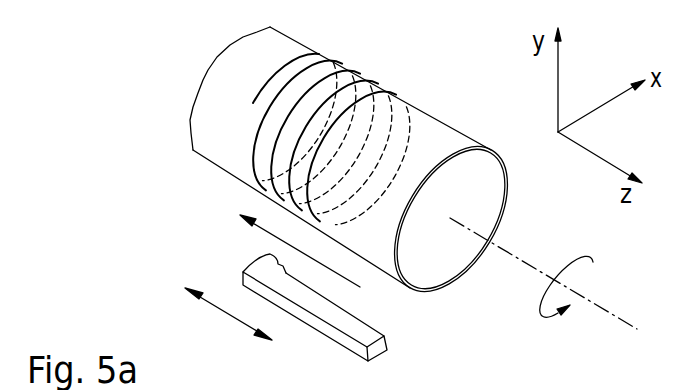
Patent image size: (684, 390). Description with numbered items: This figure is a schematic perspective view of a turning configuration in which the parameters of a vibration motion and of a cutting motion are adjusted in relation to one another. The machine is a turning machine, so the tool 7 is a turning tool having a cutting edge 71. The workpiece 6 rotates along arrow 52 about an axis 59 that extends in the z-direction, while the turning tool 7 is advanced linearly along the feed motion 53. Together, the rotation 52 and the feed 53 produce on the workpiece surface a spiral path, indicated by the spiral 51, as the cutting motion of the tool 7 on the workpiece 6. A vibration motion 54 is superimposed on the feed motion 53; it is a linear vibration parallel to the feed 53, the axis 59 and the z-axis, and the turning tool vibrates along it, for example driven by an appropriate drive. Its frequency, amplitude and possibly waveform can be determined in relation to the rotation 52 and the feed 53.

The workpiece 6 is at (490, 203).
The spiral 51 is at (370, 78).
The feed motion 53 is at (268, 235).
The vibration motion 54 is at (221, 312).
The tool 7 is at (288, 309).
The cutting edge 71 is at (252, 266).
The axis 59 is at (624, 320).
The rotation 52 is at (538, 312).